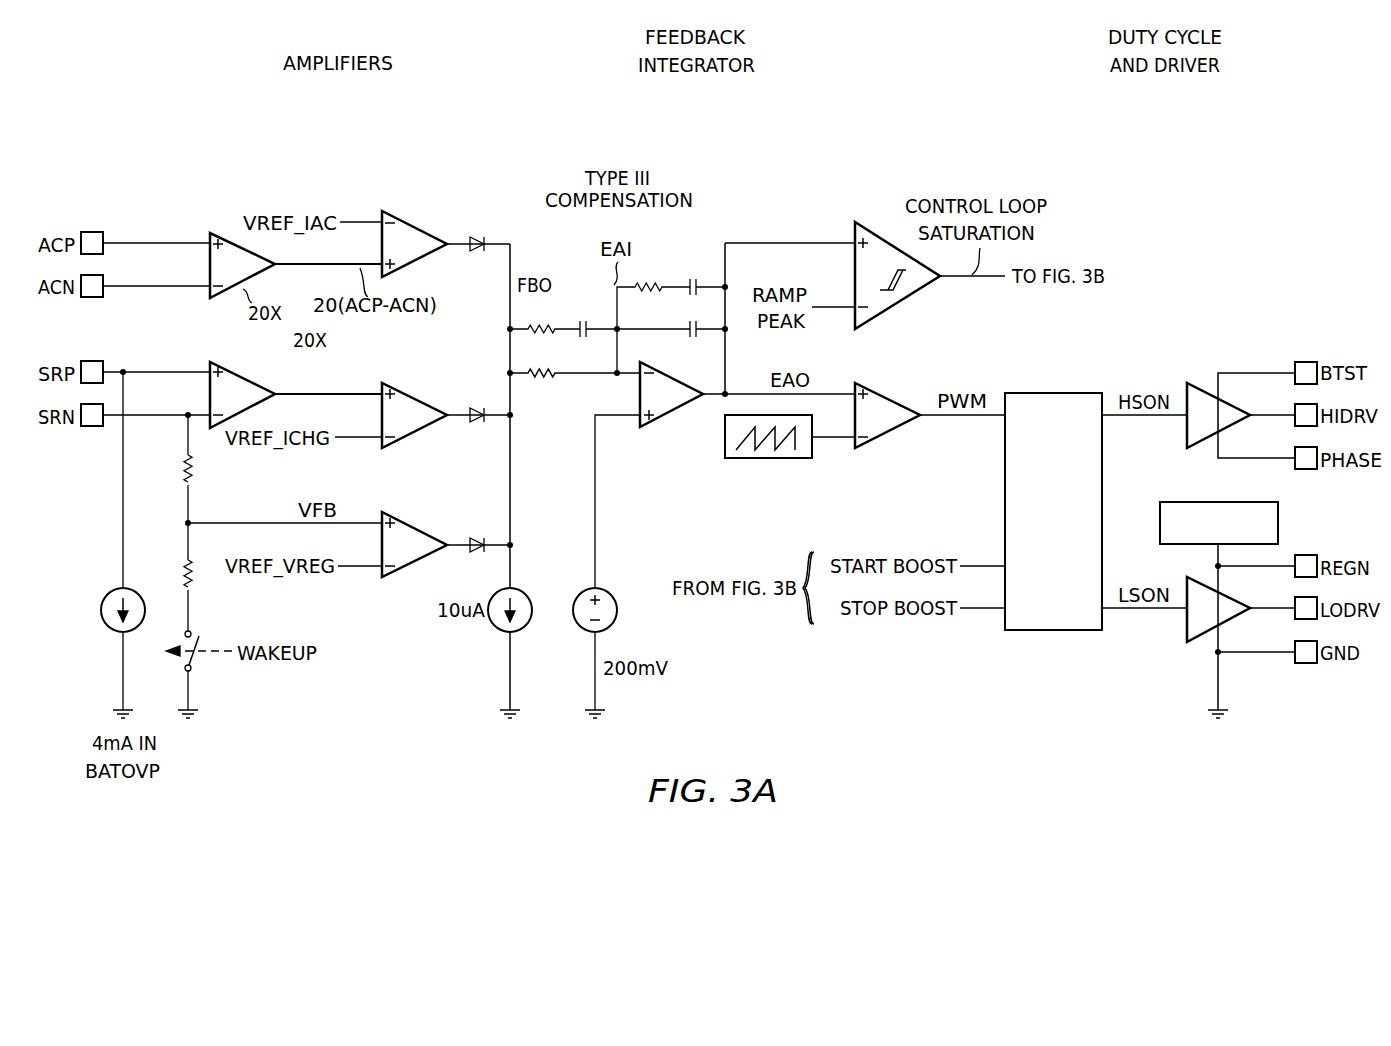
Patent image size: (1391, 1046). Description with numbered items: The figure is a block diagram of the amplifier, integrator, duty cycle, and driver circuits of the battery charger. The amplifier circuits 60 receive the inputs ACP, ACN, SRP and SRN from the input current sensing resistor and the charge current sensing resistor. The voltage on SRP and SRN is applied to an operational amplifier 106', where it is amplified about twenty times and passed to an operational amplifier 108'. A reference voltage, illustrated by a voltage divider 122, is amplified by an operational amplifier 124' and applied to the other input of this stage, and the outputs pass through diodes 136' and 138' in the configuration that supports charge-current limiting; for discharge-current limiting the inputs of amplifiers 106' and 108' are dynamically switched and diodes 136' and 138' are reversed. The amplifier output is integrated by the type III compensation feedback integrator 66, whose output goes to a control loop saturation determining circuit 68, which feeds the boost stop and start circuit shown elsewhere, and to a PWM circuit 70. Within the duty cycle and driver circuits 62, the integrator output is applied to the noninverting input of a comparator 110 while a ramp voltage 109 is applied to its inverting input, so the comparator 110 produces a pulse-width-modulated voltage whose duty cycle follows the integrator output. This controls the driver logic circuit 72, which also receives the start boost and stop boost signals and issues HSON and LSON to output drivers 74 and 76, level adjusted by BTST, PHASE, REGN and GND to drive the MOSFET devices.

The amplifier circuits 60 is at (359, 137).
The duty cycle and driver circuits 62 is at (1138, 137).
The feedback integrator 66 is at (671, 137).
The control loop saturation determining circuit 68 is at (901, 313).
The PWM circuit 70 is at (962, 359).
The driver logic circuit 72 is at (1052, 631).
The output driver 74 is at (1187, 432).
The output driver 76 is at (1187, 625).
The operational amplifier 106' is at (242, 390).
The operational amplifier 108' is at (422, 394).
The ramp voltage 109 is at (725, 437).
The comparator 110 is at (888, 440).
The voltage divider 122 is at (211, 471).
The operational amplifier 124' is at (424, 523).
The diode 136' is at (472, 386).
The diode 138' is at (472, 516).